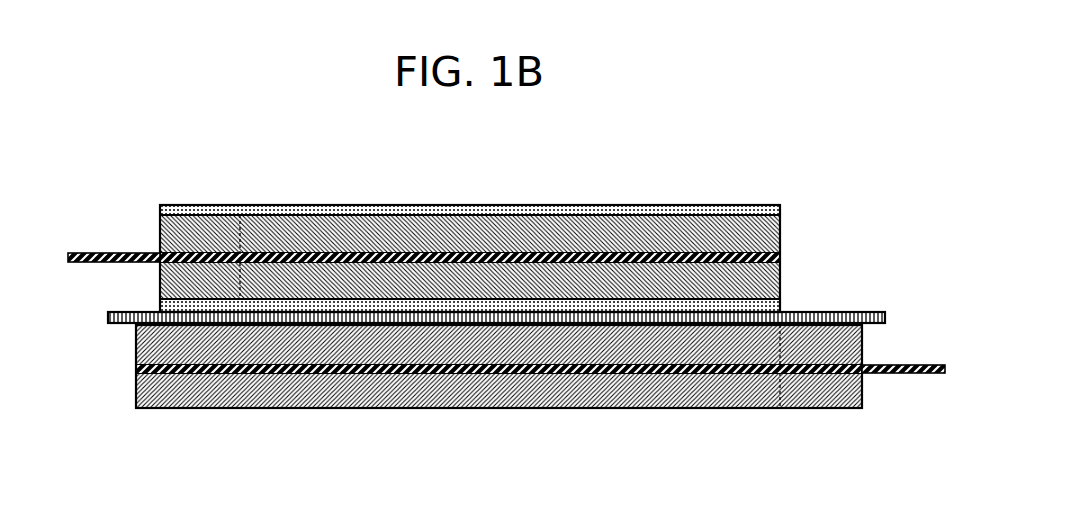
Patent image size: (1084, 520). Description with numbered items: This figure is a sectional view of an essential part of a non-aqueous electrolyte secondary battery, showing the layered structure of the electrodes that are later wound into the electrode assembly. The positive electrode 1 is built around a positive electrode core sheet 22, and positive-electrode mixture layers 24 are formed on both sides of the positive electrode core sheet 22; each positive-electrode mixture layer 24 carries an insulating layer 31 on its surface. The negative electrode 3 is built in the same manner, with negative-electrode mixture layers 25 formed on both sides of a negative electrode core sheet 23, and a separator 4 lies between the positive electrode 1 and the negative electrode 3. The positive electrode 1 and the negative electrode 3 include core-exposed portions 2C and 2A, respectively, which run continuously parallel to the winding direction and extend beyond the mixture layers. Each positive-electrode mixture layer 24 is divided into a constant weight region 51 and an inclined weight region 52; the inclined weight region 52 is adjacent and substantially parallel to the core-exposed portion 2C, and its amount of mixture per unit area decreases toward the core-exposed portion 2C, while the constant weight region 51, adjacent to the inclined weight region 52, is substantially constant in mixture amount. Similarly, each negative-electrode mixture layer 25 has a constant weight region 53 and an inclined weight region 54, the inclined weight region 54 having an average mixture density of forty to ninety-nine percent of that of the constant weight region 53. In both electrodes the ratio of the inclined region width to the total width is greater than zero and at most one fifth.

The positive electrode 1 is at (546, 222).
The core-exposed portion 2A is at (865, 378).
The core-exposed portion 2C is at (70, 252).
The negative electrode 3 is at (459, 404).
The separator 4 is at (485, 318).
The positive electrode core sheet 22 is at (720, 258).
The negative electrode core sheet 23 is at (355, 368).
The positive-electrode mixture layers 24 is at (613, 275).
The negative-electrode mixture layers 25 is at (280, 350).
The insulating layer 31 is at (522, 305).
The constant weight region 51 is at (327, 227).
The inclined weight region 52 is at (203, 227).
The constant weight region 53 is at (572, 393).
The inclined weight region 54 is at (803, 400).